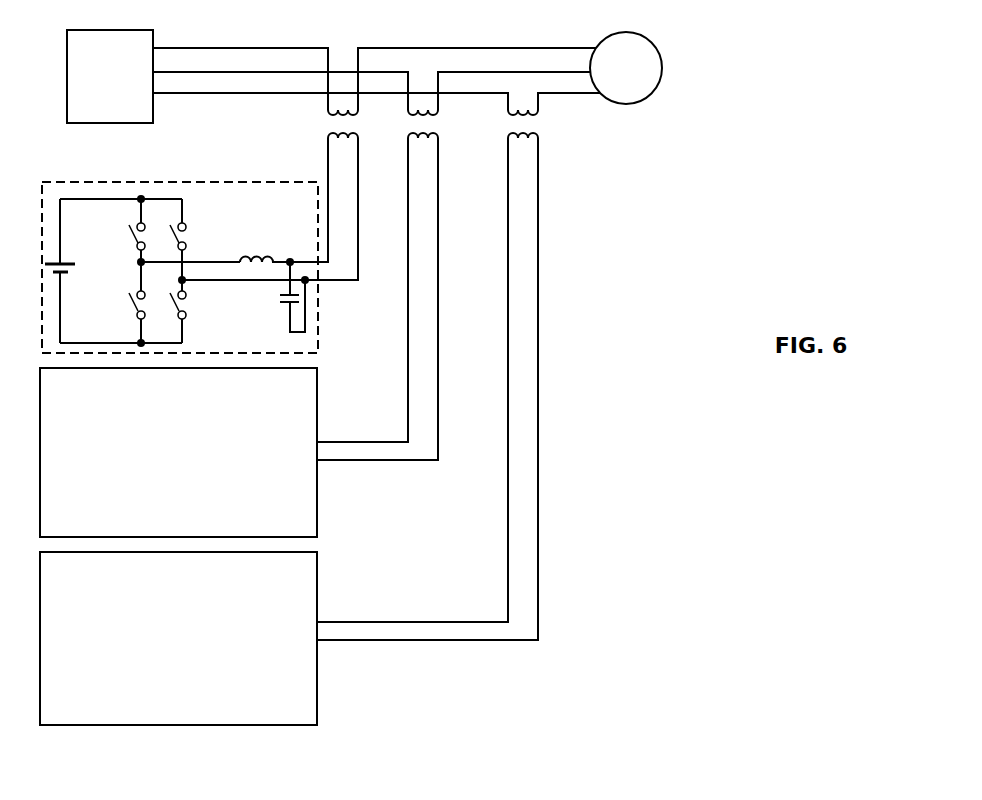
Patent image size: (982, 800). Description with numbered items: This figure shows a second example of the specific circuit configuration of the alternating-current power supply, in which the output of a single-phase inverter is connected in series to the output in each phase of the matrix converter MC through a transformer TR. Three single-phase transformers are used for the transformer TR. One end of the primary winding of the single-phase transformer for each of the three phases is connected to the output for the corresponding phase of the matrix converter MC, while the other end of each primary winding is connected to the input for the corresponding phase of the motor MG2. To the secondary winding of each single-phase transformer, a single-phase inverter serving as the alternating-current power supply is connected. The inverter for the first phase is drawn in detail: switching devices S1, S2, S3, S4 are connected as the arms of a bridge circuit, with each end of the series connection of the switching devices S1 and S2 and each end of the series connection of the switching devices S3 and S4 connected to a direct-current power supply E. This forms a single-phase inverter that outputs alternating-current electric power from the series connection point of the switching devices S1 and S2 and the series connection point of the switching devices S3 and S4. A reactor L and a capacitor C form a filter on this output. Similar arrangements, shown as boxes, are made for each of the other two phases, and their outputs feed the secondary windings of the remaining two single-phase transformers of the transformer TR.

The matrix converter MC is at (110, 76).
The motor MG2 is at (626, 68).
The transformer TR is at (452, 131).
The direct-current power supply E is at (62, 271).
The switching device S1 is at (121, 236).
The switching device S2 is at (121, 305).
The switching device S3 is at (195, 236).
The switching device S4 is at (195, 305).
The reactor L is at (265, 242).
The capacitor C is at (284, 297).